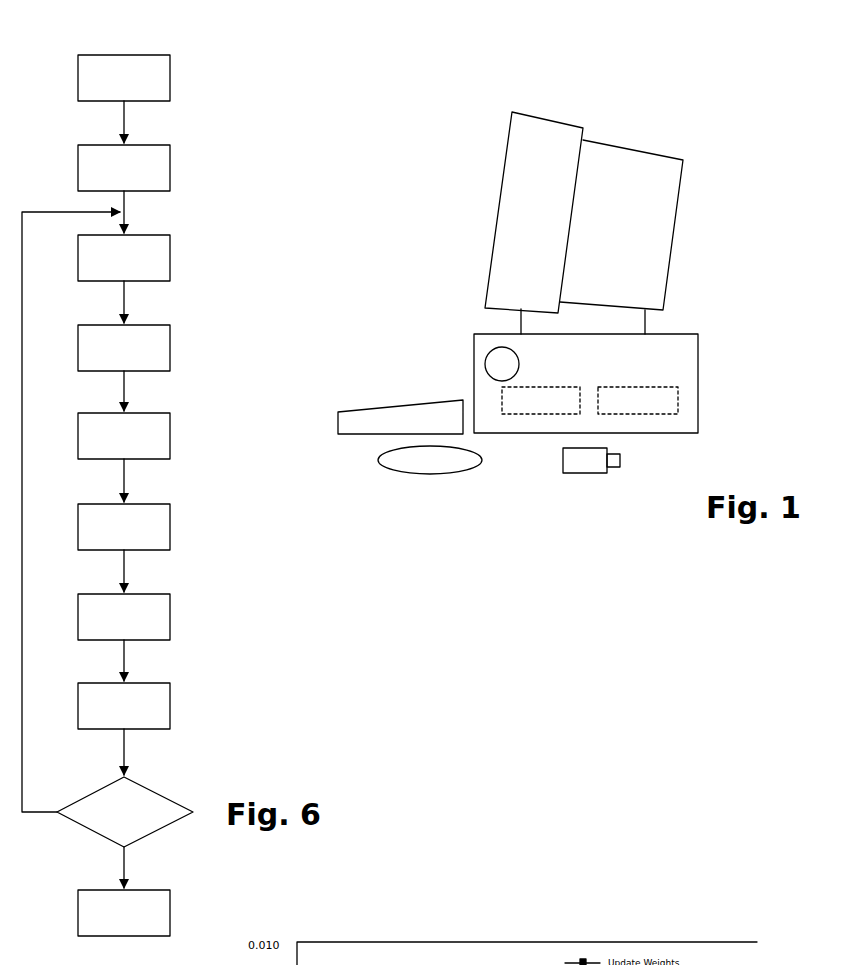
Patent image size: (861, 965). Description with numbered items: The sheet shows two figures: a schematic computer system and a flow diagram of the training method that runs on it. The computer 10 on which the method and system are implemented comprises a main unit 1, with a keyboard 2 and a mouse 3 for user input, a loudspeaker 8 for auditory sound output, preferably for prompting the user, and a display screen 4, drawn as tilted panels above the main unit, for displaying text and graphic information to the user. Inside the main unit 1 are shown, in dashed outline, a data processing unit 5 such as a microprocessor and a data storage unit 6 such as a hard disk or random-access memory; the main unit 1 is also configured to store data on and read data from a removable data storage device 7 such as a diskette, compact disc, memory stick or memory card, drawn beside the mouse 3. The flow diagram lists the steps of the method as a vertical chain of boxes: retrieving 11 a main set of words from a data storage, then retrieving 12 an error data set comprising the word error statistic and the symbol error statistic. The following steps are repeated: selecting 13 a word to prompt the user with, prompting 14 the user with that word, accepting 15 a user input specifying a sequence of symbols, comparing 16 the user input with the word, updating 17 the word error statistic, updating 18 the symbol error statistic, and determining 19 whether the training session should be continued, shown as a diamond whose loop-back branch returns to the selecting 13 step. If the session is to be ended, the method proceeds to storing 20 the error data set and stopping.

In FIG. 1, the main unit 1 is at (687, 363).
In FIG. 1, the keyboard 2 is at (382, 409).
In FIG. 1, the mouse 3 is at (378, 463).
In FIG. 1, the display screen 4 is at (507, 140).
In FIG. 1, the data processing unit 5 is at (533, 392).
In FIG. 1, the data storage unit 6 is at (622, 392).
In FIG. 1, the removable data storage device 7 is at (562, 463).
In FIG. 1, the loudspeaker 8 is at (484, 355).
In FIG. 1, the computer 10 is at (332, 123).
In FIG. 6, the retrieving step (retr wd) 11 is at (163, 62).
In FIG. 6, the retrieving step (retr stat) 12 is at (163, 152).
In FIG. 6, the selecting step (sel) 13 is at (163, 242).
In FIG. 6, the prompting step (prmpt) 14 is at (163, 332).
In FIG. 6, the accepting step (inp) 15 is at (163, 420).
In FIG. 6, the comparing step (comp) 16 is at (163, 511).
In FIG. 6, the updating step (wd stat) 17 is at (163, 601).
In FIG. 6, the updating step (sym stat) 18 is at (163, 690).
In FIG. 6, the determining step (finis?) 19 is at (152, 803).
In FIG. 6, the storing step (stor) 20 is at (163, 897).